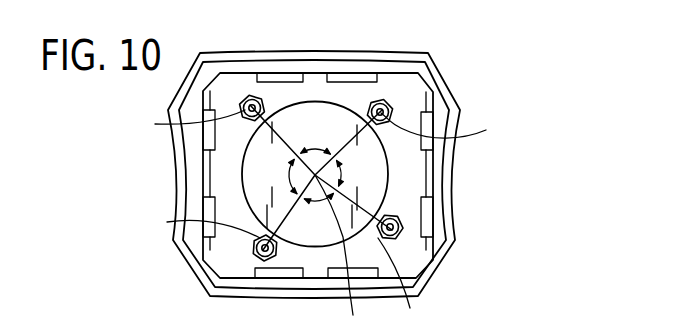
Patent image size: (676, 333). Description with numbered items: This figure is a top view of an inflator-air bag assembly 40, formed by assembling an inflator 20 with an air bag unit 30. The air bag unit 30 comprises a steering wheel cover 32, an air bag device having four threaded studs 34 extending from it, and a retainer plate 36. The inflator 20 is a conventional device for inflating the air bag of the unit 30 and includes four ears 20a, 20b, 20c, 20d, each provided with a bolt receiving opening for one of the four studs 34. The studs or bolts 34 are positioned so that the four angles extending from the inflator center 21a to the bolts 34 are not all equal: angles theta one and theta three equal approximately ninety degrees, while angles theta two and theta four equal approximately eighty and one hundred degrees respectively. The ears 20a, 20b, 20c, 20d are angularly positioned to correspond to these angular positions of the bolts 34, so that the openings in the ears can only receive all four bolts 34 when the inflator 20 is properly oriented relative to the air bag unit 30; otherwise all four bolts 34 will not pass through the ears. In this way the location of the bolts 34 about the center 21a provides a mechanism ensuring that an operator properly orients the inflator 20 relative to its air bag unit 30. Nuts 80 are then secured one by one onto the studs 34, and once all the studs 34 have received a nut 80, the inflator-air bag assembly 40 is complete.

The inflator 20 is at (308, 105).
The ear 20a is at (455, 128).
The ear 20b is at (176, 124).
The ear 20c is at (187, 224).
The ear 20d is at (406, 285).
The inflator center 21a is at (351, 254).
The air bag unit 30 is at (470, 108).
The steering wheel cover 32 is at (434, 70).
The threaded studs 34 is at (246, 103).
The retainer plate 36 is at (398, 80).
The inflator-air bag assembly 40 is at (455, 209).
The nuts 80 is at (259, 99).